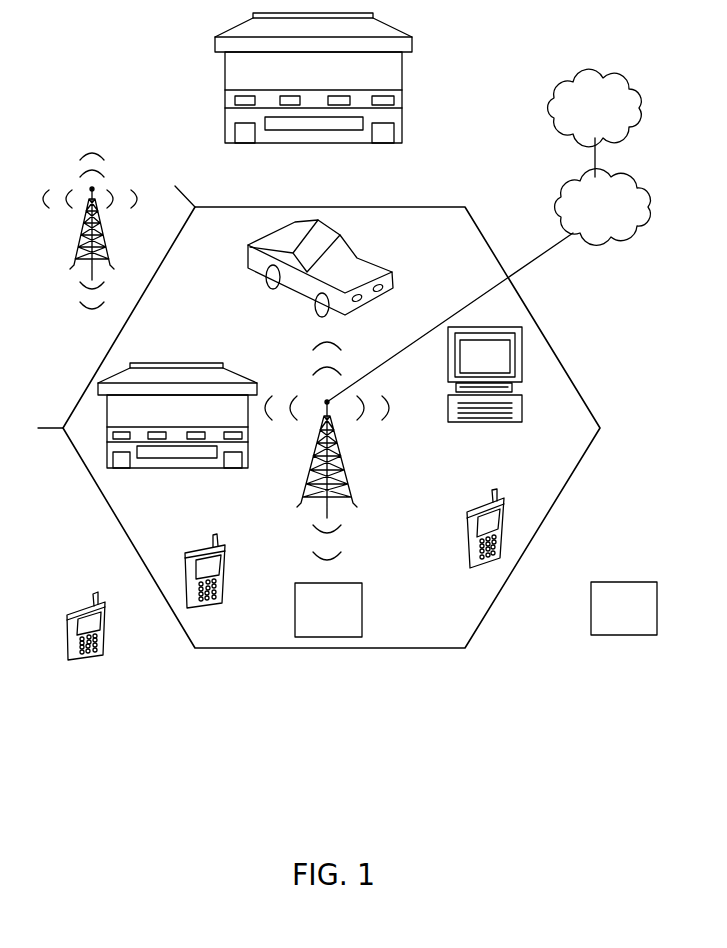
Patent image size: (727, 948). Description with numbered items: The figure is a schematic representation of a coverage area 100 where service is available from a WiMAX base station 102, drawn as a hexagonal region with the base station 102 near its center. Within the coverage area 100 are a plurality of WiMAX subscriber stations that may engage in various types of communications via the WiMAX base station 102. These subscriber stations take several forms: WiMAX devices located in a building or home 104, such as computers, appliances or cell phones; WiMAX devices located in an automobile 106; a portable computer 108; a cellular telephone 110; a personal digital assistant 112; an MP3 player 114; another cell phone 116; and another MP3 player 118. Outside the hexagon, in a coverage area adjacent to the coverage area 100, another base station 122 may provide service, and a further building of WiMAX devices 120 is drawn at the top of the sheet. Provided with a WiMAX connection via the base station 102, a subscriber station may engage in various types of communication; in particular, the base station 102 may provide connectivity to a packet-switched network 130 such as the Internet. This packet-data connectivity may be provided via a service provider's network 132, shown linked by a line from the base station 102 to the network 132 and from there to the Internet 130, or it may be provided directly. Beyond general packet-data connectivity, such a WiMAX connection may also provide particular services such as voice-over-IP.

The coverage area 100 is at (382, 649).
The WiMAX base station 102 is at (346, 487).
The building or home 104 is at (178, 363).
The automobile 106 is at (394, 285).
The portable computer 108 is at (522, 413).
The cellular telephone 110 is at (465, 557).
The personal digital assistant 112 is at (226, 590).
The MP3 player 114 is at (362, 612).
The cell phone 116 is at (106, 645).
The MP3 player 118 is at (590, 622).
The WiMax devices building 120 is at (402, 117).
The base station 122 is at (105, 250).
The packet-switched network 130 is at (555, 127).
The service provider's network 132 is at (560, 203).